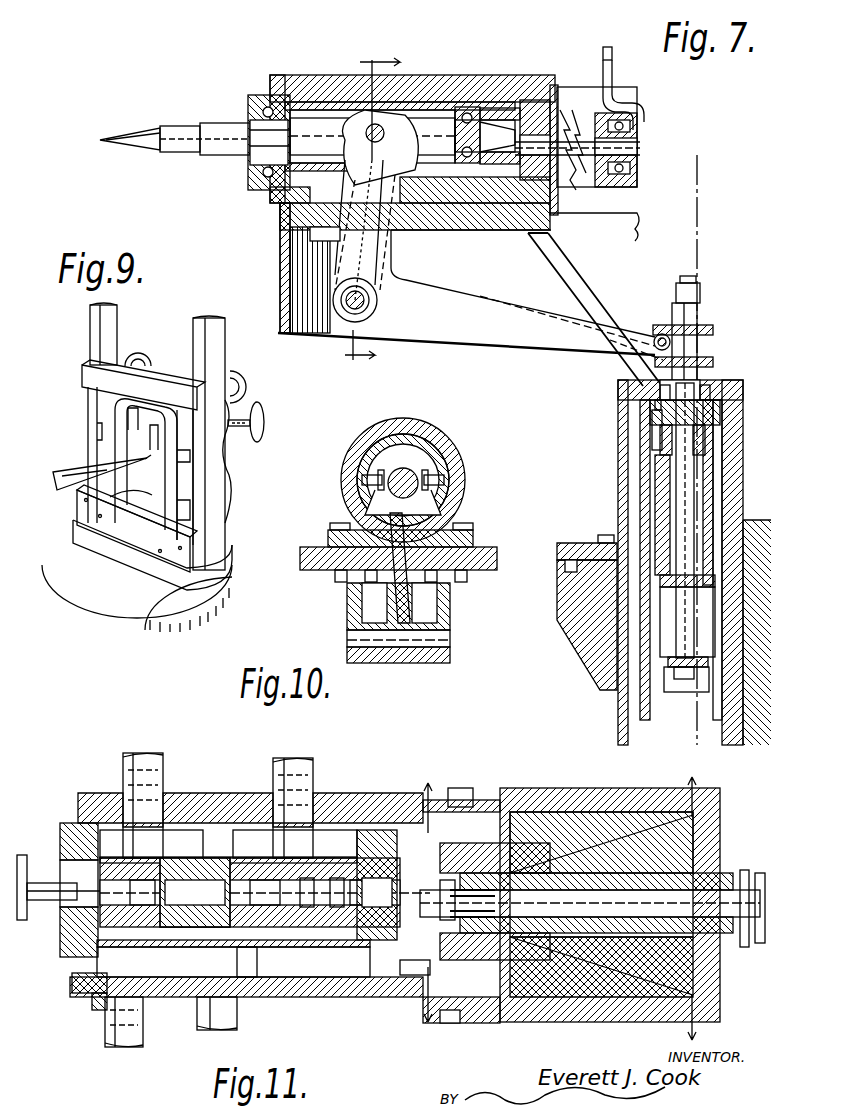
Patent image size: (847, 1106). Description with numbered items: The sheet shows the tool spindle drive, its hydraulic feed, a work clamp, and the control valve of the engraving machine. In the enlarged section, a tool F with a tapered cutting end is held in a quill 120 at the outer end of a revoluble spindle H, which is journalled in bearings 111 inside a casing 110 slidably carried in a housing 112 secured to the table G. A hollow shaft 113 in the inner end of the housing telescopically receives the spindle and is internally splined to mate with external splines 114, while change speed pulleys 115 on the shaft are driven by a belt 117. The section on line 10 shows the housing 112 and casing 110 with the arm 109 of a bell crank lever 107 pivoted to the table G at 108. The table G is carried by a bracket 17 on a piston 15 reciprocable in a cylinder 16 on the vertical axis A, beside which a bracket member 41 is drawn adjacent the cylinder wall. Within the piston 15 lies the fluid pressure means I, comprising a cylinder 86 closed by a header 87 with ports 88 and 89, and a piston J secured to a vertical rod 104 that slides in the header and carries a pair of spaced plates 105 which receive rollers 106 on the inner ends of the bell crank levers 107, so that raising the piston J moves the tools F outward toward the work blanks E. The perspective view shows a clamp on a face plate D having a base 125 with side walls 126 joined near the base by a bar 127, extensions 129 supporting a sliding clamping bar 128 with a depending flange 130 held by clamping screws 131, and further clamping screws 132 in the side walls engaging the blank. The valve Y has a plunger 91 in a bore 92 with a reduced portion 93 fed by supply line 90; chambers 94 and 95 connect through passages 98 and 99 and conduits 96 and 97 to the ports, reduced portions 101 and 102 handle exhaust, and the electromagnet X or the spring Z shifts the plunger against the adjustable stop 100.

In FIG. 7, the tool F is at (132, 132).
In FIG. 9, the tool F is at (147, 449).
In FIG. 7, the quill 120 is at (196, 130).
In FIG. 9, the quill 120 is at (73, 468).
In FIG. 7, the housing 112 is at (417, 76).
In FIG. 10, the housing 112 is at (418, 420).
In FIG. 7, the casing 110 is at (442, 102).
In FIG. 10, the casing 110 is at (466, 460).
In FIG. 7, the bearings 111 is at (274, 100).
In FIG. 7, the spindle H is at (311, 114).
In FIG. 10, the spindle H is at (415, 462).
In FIG. 7, the arm 109 is at (332, 266).
In FIG. 10, the arm 109 is at (410, 598).
In FIG. 7, the table G is at (280, 244).
In FIG. 7, the pivot 108 is at (346, 305).
In FIG. 10, the pivot 108 is at (387, 664).
In FIG. 7, the section line 10 is at (366, 204).
In FIG. 7, the bell crank levers 107 is at (524, 338).
In FIG. 10, the bell crank levers 107 is at (420, 662).
In FIG. 7, the bracket 17 is at (584, 294).
In FIG. 7, the hollow shaft 113 is at (537, 102).
In FIG. 7, the external splines 114 is at (508, 108).
In FIG. 7, the change speed pulleys 115 is at (574, 110).
In FIG. 7, the belt 117 is at (615, 72).
In FIG. 7, the vertical axis A is at (697, 220).
In FIG. 7, the plates 105 is at (710, 324).
In FIG. 7, the rollers 106 is at (650, 334).
In FIG. 7, the piston 15 is at (743, 522).
In FIG. 7, the cylinder 16 is at (755, 536).
In FIG. 7, the fluid pressure means I is at (755, 480).
In FIG. 7, the port 88 is at (735, 420).
In FIG. 7, the cylinder 86 is at (695, 452).
In FIG. 7, the port 89 is at (655, 452).
In FIG. 7, the header 87 is at (658, 486).
In FIG. 7, the vertical rod 104 is at (669, 512).
In FIG. 7, the piston J is at (705, 625).
In FIG. 7, the bracket 41 is at (568, 552).
In FIG. 9, the face plate D is at (98, 598).
In FIG. 9, the base 125 is at (233, 585).
In FIG. 9, the bar 127 is at (140, 540).
In FIG. 9, the extensions 129 is at (88, 330).
In FIG. 9, the flange 130 is at (90, 390).
In FIG. 9, the side walls 126 is at (87, 428).
In FIG. 9, the work blank E is at (145, 420).
In FIG. 9, the clamping bar 128 is at (158, 367).
In FIG. 9, the clamping screws 131 is at (136, 353).
In FIG. 9, the clamping screws 132 is at (267, 428).
In FIG. 11, the reduced portion 101 is at (100, 786).
In FIG. 11, the adjustable stop 100 is at (43, 880).
In FIG. 11, the reduced portion 102 is at (334, 975).
In FIG. 11, the reduced portion 93 is at (230, 864).
In FIG. 11, the chamber 94 is at (188, 879).
In FIG. 11, the passage 98 is at (207, 863).
In FIG. 11, the passage 99 is at (250, 861).
In FIG. 11, the conduit 96 is at (164, 772).
In FIG. 11, the conduit 97 is at (313, 770).
In FIG. 11, the chamber 95 is at (333, 840).
In FIG. 11, the bore 92 is at (175, 996).
In FIG. 11, the fluid pressure supply line 90 is at (238, 1018).
In FIG. 11, the plunger 91 is at (286, 976).
In FIG. 11, the electromagnet X is at (490, 804).
In FIG. 11, the valve Y is at (364, 820).
In FIG. 11, the spring Z is at (438, 952).